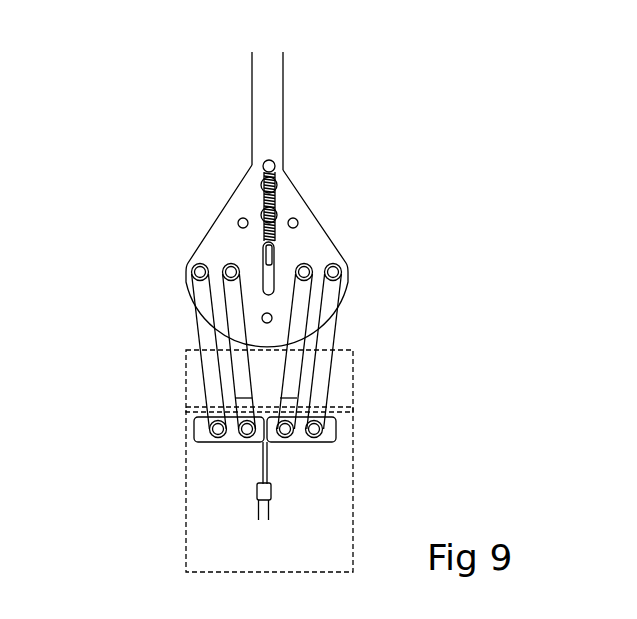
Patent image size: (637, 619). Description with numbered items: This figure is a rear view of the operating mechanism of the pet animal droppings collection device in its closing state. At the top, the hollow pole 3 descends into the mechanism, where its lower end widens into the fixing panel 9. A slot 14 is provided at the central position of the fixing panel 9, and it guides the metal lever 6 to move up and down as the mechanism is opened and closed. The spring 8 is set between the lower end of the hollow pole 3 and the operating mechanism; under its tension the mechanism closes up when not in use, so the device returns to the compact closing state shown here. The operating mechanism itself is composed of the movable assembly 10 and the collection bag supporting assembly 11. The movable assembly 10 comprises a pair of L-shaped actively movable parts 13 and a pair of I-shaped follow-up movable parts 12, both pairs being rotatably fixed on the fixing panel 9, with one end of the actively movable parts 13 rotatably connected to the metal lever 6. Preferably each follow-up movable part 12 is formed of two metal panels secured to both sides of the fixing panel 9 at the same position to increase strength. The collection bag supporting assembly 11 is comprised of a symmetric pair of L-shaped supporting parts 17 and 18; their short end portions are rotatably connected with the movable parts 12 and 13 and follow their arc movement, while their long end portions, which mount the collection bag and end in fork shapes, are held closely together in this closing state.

The hollow pole 3 is at (270, 93).
The metal lever 6 is at (273, 247).
The spring 8 is at (275, 208).
The fixing panel 9 is at (230, 238).
The movable assembly 10 is at (355, 385).
The collection bag supporting assembly 11 is at (185, 515).
The I-shaped follow-up movable parts 12 is at (212, 362).
The L-shaped actively movable parts 13 is at (245, 389).
The slot 14 is at (271, 270).
The L-shaped supporting part 17 is at (257, 503).
The L-shaped supporting part 18 is at (270, 503).